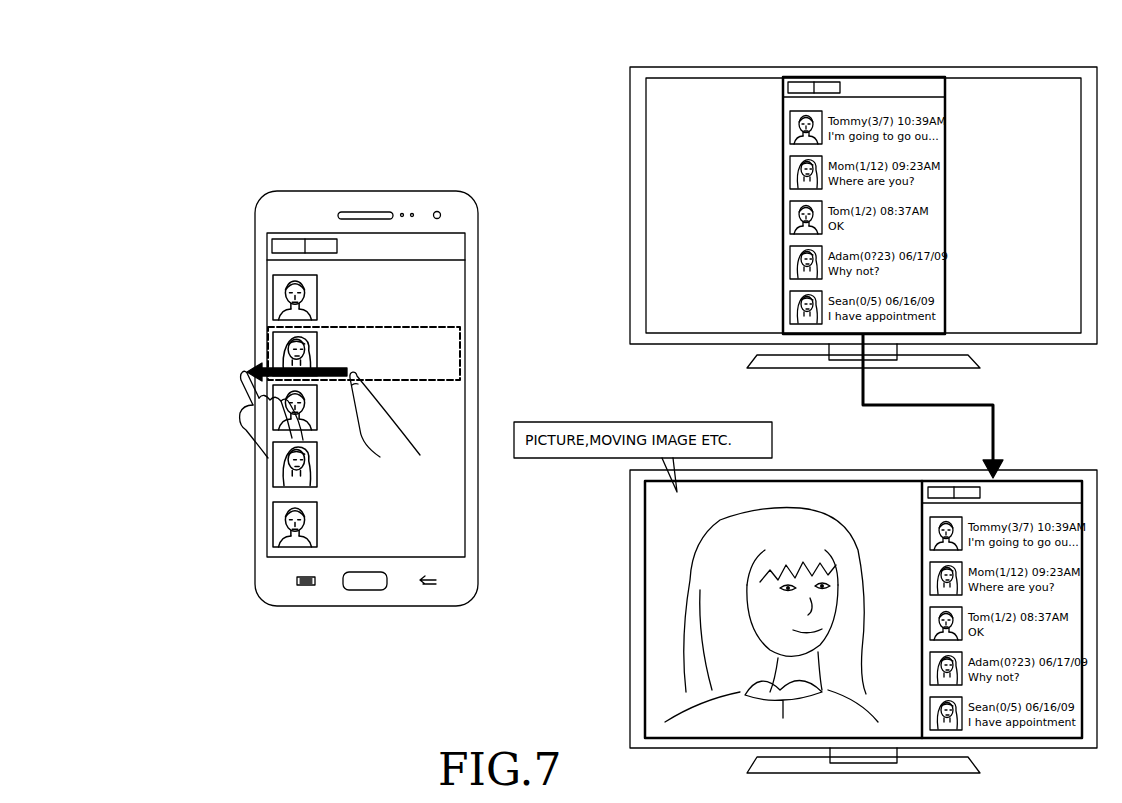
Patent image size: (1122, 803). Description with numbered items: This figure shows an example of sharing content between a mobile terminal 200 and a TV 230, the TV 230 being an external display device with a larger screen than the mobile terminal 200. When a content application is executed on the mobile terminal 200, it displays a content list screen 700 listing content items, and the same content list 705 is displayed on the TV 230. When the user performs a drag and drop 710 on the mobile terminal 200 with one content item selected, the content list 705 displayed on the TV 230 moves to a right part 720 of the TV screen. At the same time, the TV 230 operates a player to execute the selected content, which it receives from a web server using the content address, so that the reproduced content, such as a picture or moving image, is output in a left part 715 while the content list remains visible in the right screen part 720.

The mobile terminal 200 is at (366, 191).
The content list screen 700 is at (457, 272).
The drag and drop 710 is at (247, 366).
The content list 705 is at (862, 76).
The TV 230 is at (1001, 67).
The left screen part 715 is at (828, 480).
The right screen part 720 is at (1040, 481).